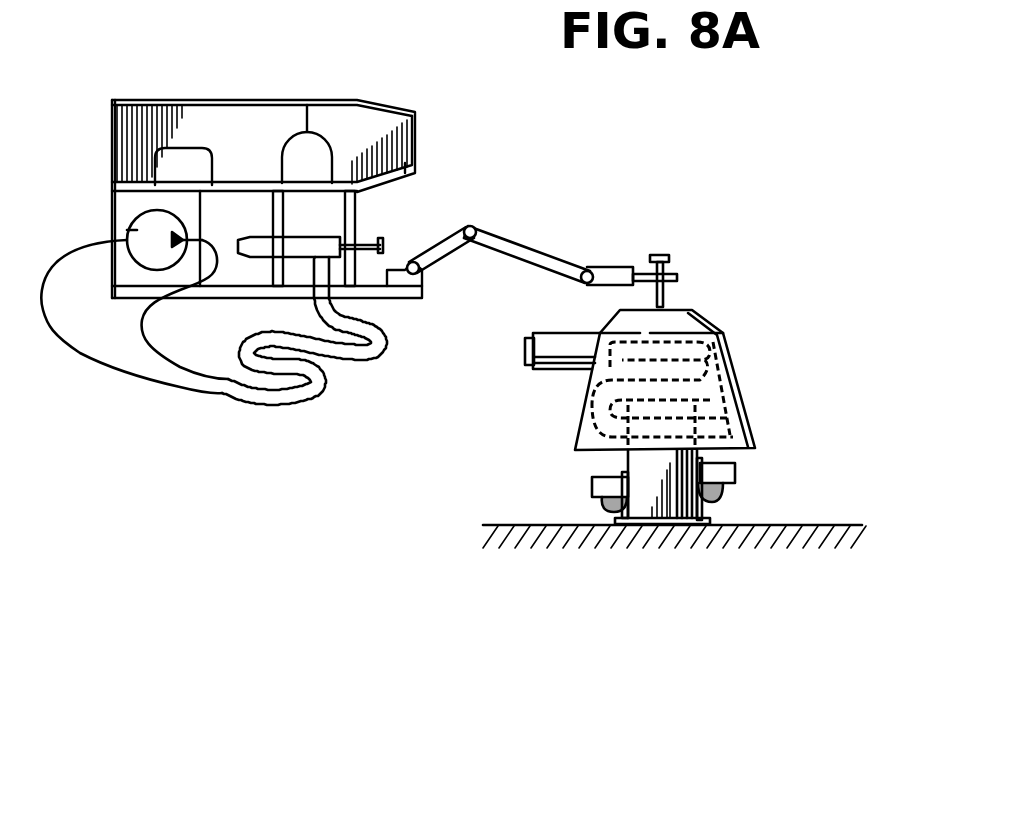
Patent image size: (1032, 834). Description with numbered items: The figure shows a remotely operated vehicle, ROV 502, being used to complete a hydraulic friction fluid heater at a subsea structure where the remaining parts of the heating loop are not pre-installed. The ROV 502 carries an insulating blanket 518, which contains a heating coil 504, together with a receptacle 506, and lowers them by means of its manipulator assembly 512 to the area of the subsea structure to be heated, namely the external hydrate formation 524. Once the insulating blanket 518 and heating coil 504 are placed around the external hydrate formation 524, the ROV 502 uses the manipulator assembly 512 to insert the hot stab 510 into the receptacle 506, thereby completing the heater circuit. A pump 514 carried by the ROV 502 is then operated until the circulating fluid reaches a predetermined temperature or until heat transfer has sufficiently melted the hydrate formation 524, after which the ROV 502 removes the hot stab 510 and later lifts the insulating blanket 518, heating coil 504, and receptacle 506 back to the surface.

The ROV 502 is at (235, 113).
The pump 514 is at (135, 233).
The hot stab 510 is at (310, 242).
The manipulator assembly 512 is at (532, 252).
The heating coil 504 is at (700, 332).
The receptacle 506 is at (553, 360).
The insulating blanket 518 is at (575, 438).
The external hydrate formation 524 is at (607, 505).